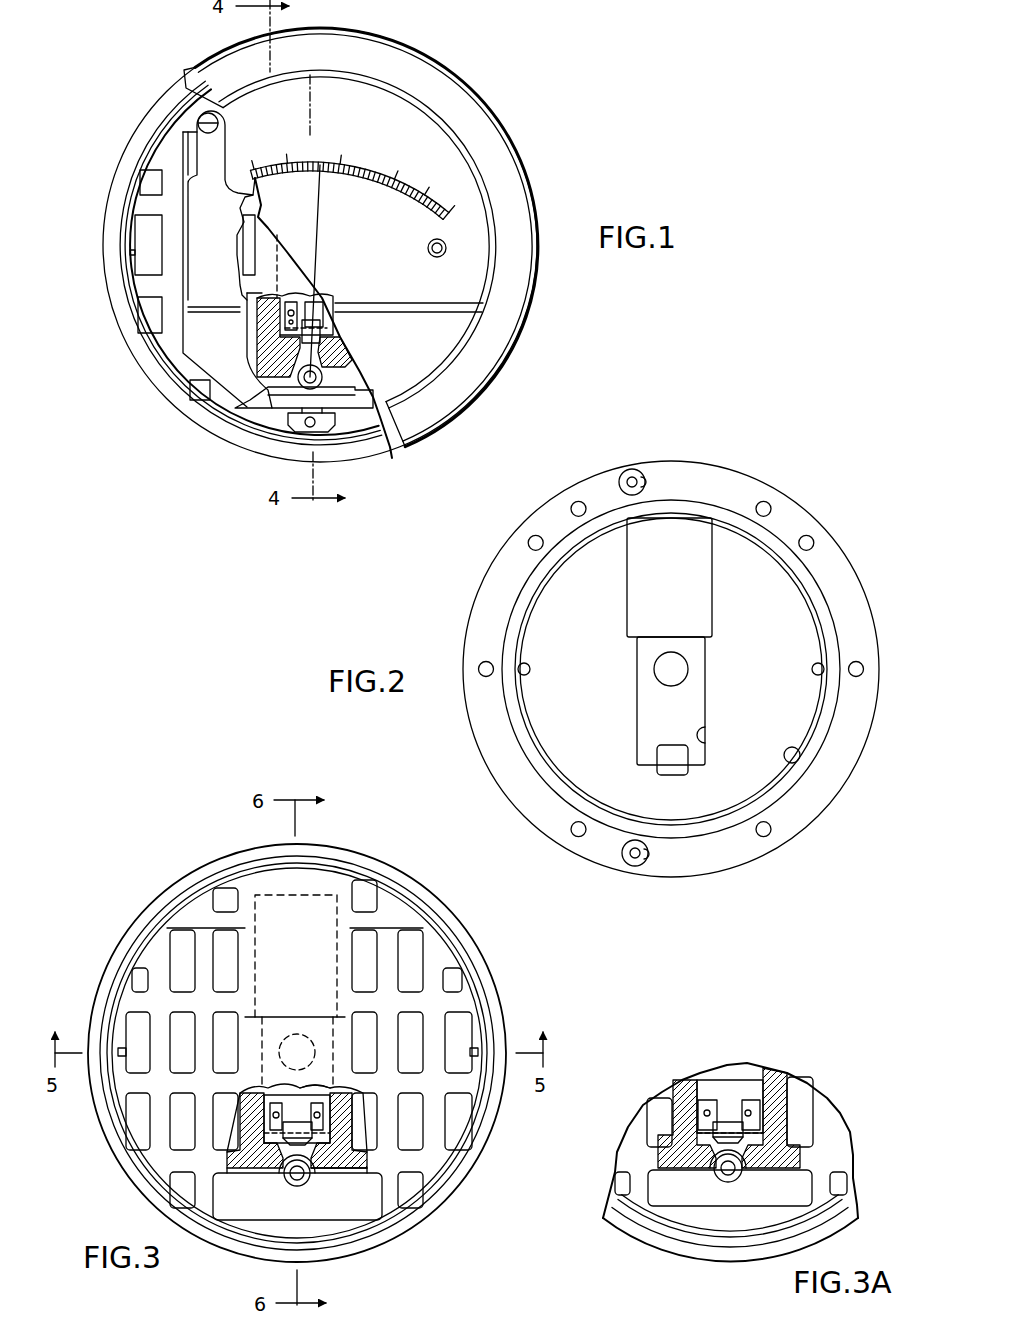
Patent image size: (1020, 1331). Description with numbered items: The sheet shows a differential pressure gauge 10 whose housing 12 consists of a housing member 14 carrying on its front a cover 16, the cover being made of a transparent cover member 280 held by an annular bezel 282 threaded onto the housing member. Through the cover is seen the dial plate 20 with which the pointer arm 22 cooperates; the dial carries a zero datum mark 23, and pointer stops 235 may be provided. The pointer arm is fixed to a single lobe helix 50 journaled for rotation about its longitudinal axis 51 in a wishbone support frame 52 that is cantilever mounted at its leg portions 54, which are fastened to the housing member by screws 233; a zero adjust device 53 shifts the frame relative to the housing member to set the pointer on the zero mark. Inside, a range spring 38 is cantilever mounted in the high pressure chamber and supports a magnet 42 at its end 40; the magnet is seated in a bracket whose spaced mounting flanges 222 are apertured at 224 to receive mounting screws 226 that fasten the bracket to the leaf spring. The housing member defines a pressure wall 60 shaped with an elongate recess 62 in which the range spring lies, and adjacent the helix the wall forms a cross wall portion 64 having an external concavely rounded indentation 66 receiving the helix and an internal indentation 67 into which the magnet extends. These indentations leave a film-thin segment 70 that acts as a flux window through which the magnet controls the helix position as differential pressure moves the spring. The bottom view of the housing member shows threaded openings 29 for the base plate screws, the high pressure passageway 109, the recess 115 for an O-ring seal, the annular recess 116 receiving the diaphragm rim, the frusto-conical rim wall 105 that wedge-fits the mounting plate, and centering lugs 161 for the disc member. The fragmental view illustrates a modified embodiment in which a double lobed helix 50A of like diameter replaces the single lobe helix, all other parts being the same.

In FIG. 1, the differential pressure gauge 10 is at (562, 120).
In FIG. 1, the housing 12 is at (180, 430).
In FIG. 2, the housing 12 is at (796, 478).
In FIG. 3, the housing 12 is at (490, 930).
In FIG. 3A, the housing 12 is at (832, 1080).
In FIG. 1, the housing member 14 is at (268, 460).
In FIG. 2, the housing member 14 is at (814, 515).
In FIG. 3, the housing member 14 is at (503, 975).
In FIG. 3A, the housing member 14 is at (842, 1106).
In FIG. 1, the cover 16 is at (527, 172).
In FIG. 1, the dial plate 20 is at (410, 135).
In FIG. 1, the pointer arm 22 is at (316, 242).
In FIG. 1, the zero datum mark 23 is at (320, 146).
In FIG. 2, the threaded openings 29 is at (812, 543).
In FIG. 3, the range spring 38 is at (332, 1085).
In FIG. 3, the end of range spring 40 is at (332, 1138).
In FIG. 3, the magnet 42 is at (284, 1155).
In FIG. 3A, the magnet 42 is at (708, 1144).
In FIG. 1, the single lobe helix 50 is at (336, 364).
In FIG. 3, the single lobe helix 50 is at (297, 1188).
In FIG. 3A, the double lobed helix 50A is at (725, 1186).
In FIG. 1, the longitudinal axis 51 is at (324, 384).
In FIG. 3, the longitudinal axis 51 is at (300, 1178).
In FIG. 1, the support frame 52 is at (207, 231).
In FIG. 1, the zero adjust device 53 is at (330, 437).
In FIG. 1, the leg portions 54 is at (205, 165).
In FIG. 1, the pressure wall 60 is at (272, 282).
In FIG. 2, the pressure wall 60 is at (704, 742).
In FIG. 2, the recess 62 is at (700, 688).
In FIG. 3, the cross wall portion 64 is at (335, 1160).
In FIG. 3, the external indentation 66 is at (296, 1150).
In FIG. 3, the internal indentation 67 is at (280, 1110).
In FIG. 3A, the internal indentation 67 is at (727, 1110).
In FIG. 3, the segment 70 is at (315, 1180).
In FIG. 2, the rim wall 105 is at (795, 760).
In FIG. 2, the passageway 109 is at (628, 478).
In FIG. 2, the recess 115 is at (644, 480).
In FIG. 2, the annular recess 116 is at (822, 604).
In FIG. 2, the centering lugs 161 is at (530, 668).
In FIG. 3, the mounting flanges 222 is at (275, 1110).
In FIG. 3, the apertures 224 is at (300, 1085).
In FIG. 3, the mounting screws 226 is at (272, 1118).
In FIG. 1, the screws 233 is at (198, 119).
In FIG. 1, the pointer stops 235 is at (436, 258).
In FIG. 1, the cover member 280 is at (440, 165).
In FIG. 1, the bezel 282 is at (516, 216).